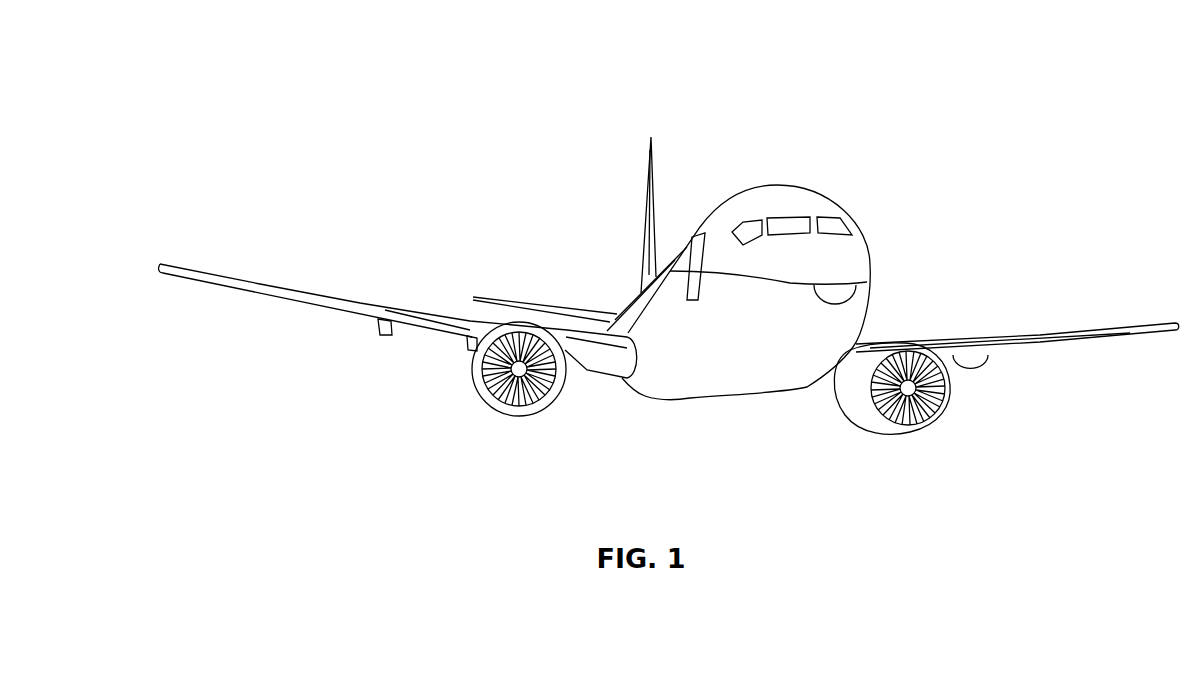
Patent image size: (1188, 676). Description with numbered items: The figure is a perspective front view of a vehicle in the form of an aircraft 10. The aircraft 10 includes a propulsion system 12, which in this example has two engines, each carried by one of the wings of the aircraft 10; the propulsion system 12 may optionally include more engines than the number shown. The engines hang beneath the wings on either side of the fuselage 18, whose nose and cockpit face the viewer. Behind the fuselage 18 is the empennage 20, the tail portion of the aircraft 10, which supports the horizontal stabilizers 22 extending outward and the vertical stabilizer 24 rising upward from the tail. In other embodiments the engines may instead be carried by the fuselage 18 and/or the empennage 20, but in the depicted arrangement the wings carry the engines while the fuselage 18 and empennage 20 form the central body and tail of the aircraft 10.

The aircraft 10 is at (417, 88).
The propulsion system 12 is at (1037, 412).
The fuselage 18 is at (868, 250).
The empennage 20 is at (637, 280).
The horizontal stabilizer 22 is at (509, 298).
The vertical stabilizer 24 is at (650, 176).